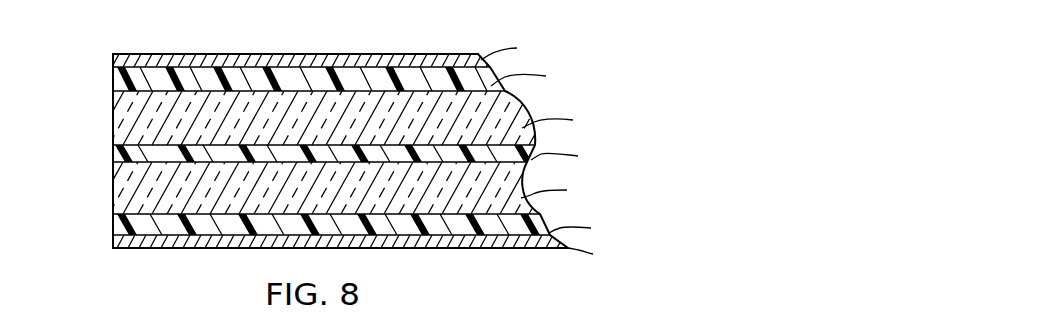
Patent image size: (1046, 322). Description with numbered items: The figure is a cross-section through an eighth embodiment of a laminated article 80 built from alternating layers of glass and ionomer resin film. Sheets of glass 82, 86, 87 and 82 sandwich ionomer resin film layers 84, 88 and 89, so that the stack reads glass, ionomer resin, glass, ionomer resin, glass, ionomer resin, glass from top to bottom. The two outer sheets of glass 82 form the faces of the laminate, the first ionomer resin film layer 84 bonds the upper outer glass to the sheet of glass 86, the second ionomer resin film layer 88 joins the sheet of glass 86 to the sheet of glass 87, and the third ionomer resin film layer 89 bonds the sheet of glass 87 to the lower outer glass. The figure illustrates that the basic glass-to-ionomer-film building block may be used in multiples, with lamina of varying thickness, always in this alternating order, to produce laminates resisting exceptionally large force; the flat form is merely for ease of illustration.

The laminated article 80 is at (83, 46).
The sheet of glass 82 is at (127, 60).
The ionomer resin film layer 84 is at (114, 83).
The sheet of glass 86 is at (113, 120).
The ionomer resin film layer 88 is at (116, 155).
The sheet of glass 87 is at (120, 192).
The ionomer resin film layer 89 is at (120, 229).